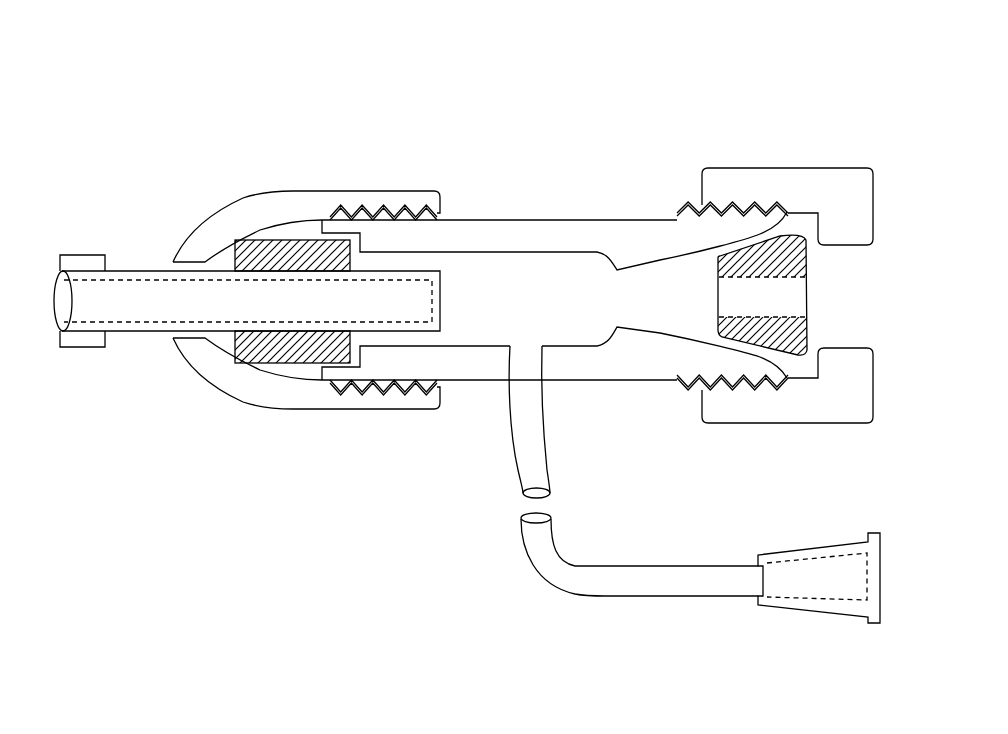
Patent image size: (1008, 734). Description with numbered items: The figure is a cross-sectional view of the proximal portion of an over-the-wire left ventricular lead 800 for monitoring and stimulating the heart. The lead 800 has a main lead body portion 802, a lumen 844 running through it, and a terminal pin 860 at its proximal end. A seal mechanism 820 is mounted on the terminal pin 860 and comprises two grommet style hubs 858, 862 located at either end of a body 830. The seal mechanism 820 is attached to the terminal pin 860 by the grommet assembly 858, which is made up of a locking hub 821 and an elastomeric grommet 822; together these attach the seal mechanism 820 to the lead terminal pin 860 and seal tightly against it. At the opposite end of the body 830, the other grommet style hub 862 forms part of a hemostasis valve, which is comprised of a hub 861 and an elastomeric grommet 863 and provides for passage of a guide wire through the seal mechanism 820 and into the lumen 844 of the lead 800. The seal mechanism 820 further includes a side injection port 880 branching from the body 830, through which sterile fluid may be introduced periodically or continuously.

The lead 800 is at (650, 81).
The main lead body portion 802 is at (92, 255).
The seal mechanism 820 is at (470, 156).
The locking hub 821 is at (358, 191).
The elastomeric grommet 822 is at (235, 340).
The body 830 is at (477, 380).
The lumen 844 is at (84, 295).
The grommet assembly 858 is at (290, 409).
The terminal pin 860 is at (135, 333).
The hub 861 is at (788, 168).
The grommet style hub 862 is at (874, 204).
The elastomeric grommet 863 is at (743, 242).
The side injection port 880 is at (895, 543).